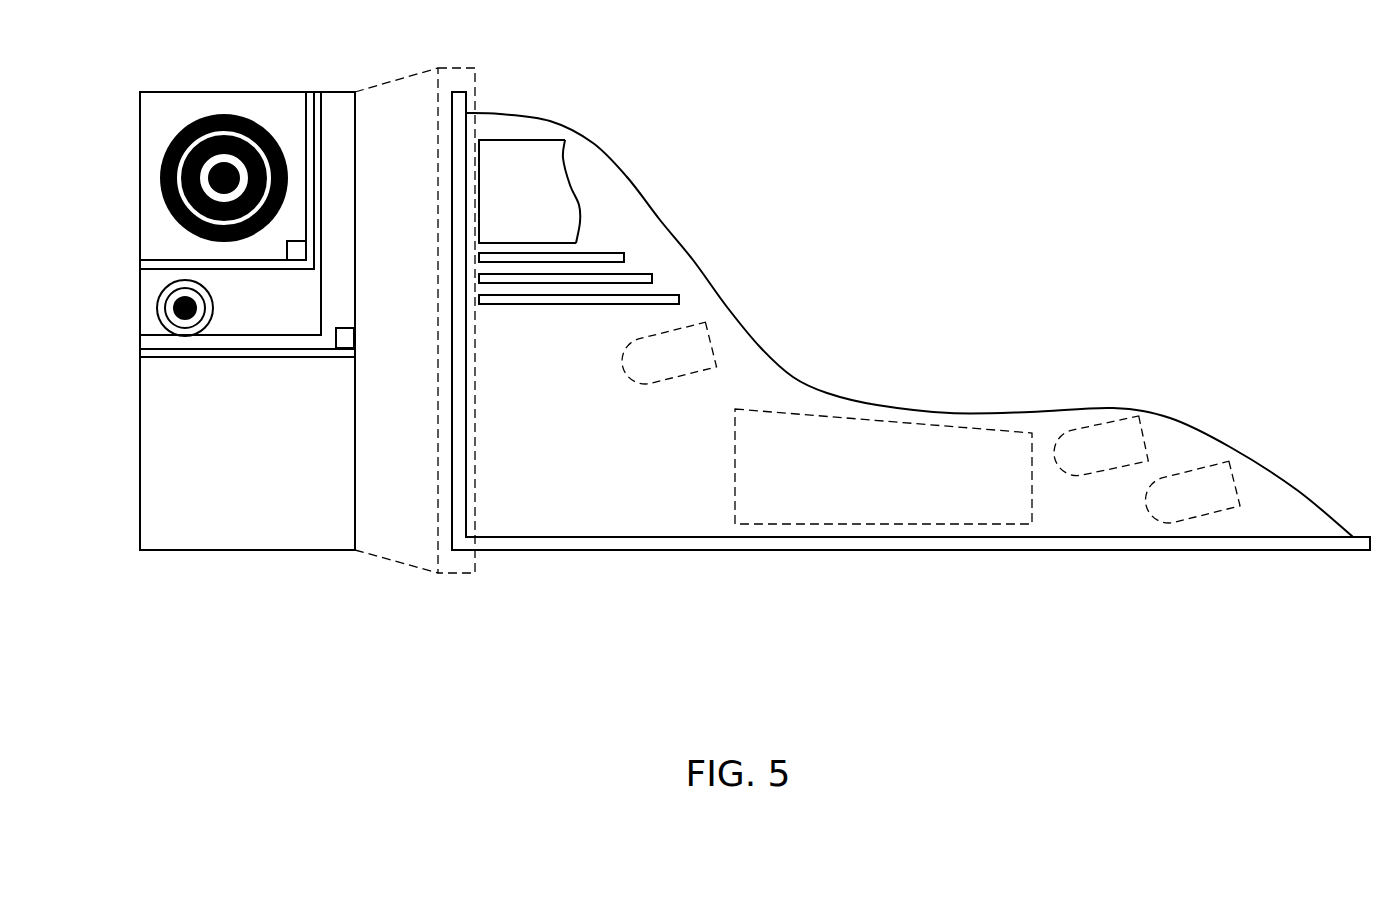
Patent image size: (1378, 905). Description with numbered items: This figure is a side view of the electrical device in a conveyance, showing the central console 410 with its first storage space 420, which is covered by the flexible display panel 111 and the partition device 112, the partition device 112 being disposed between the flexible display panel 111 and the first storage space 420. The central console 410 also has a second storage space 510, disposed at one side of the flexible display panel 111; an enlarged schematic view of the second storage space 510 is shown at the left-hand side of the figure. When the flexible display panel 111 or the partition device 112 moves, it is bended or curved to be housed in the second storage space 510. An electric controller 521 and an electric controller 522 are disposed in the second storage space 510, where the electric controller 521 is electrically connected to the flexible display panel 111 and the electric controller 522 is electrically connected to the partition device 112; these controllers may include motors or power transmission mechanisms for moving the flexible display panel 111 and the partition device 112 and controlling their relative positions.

The second storage space 510 is at (158, 92).
The flexible display panel 111 is at (220, 116).
The partition device 112 is at (160, 308).
The electric controller 521 is at (297, 247).
The electric controller 522 is at (343, 337).
The central console 410 is at (603, 516).
The first storage space 420 is at (891, 507).